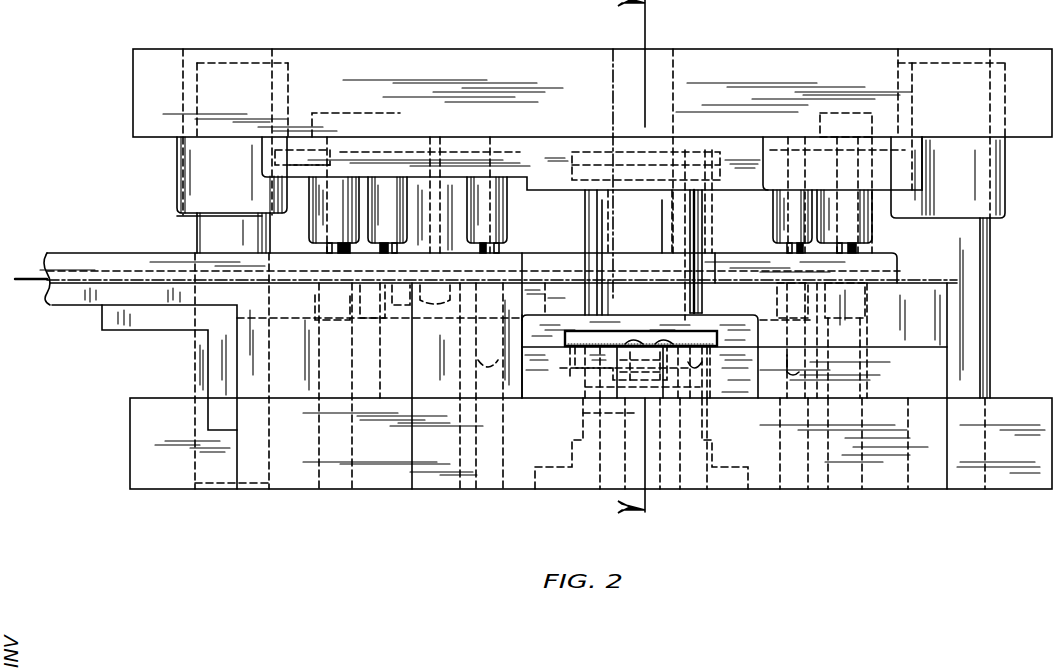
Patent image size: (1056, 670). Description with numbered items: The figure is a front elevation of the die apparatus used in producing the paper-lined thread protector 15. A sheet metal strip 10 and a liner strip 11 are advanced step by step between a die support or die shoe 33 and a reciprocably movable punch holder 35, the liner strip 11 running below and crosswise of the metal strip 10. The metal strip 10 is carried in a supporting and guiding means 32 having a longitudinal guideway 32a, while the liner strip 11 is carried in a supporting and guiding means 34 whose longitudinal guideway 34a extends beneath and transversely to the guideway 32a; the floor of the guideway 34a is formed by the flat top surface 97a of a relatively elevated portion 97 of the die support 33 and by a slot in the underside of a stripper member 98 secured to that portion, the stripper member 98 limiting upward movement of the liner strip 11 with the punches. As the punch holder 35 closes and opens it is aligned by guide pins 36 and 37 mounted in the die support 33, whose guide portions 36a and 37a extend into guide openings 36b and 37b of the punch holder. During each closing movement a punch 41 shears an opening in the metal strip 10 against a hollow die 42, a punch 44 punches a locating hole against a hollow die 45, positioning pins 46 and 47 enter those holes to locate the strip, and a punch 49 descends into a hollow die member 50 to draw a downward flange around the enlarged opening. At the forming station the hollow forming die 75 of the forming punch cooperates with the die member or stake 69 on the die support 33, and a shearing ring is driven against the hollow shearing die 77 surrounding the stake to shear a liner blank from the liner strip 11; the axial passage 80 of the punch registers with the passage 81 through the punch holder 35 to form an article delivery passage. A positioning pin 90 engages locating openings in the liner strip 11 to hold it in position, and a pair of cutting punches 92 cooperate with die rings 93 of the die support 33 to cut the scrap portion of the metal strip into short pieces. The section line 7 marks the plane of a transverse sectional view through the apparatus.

The section line 7- 7 is at (619, 262).
The sheet metal strip 10 is at (28, 280).
The liner strip 11 is at (602, 344).
The thread protector 15 is at (526, 387).
The supporting and guiding means 32 is at (88, 253).
The longitudinal guideway 32a is at (120, 275).
The die support 33 is at (158, 398).
The supporting and guiding means 34 is at (734, 316).
The longitudinal guideway 34a is at (704, 346).
The punch holder 35 is at (133, 106).
The guide pin 36 is at (206, 226).
The guide portion 36a is at (190, 171).
The guide opening 36b is at (177, 73).
The guide pin 37 is at (990, 250).
The guide portion 37a is at (1000, 177).
The guide opening 37b is at (1006, 81).
The punch 41 is at (324, 247).
The hollow die 42 is at (320, 306).
The punch 44 is at (386, 246).
The hollow die 45 is at (372, 310).
The positioning pin 46 is at (500, 249).
The positioning pin 47 is at (788, 250).
The punch 49 is at (438, 302).
The hollow die member 50 is at (402, 324).
The die member 69 is at (578, 418).
The hollow forming die 75 is at (585, 215).
The hollow shearing die 77 is at (574, 360).
The axial passage 80 is at (590, 251).
The passage 81 is at (660, 64).
The positioning pin 90 is at (700, 306).
The cutting punches 92 is at (856, 248).
The die rings 93 is at (866, 308).
The relatively elevated portion 97 is at (517, 400).
The flat top surface 97a is at (534, 346).
The stripper member 98 is at (604, 320).